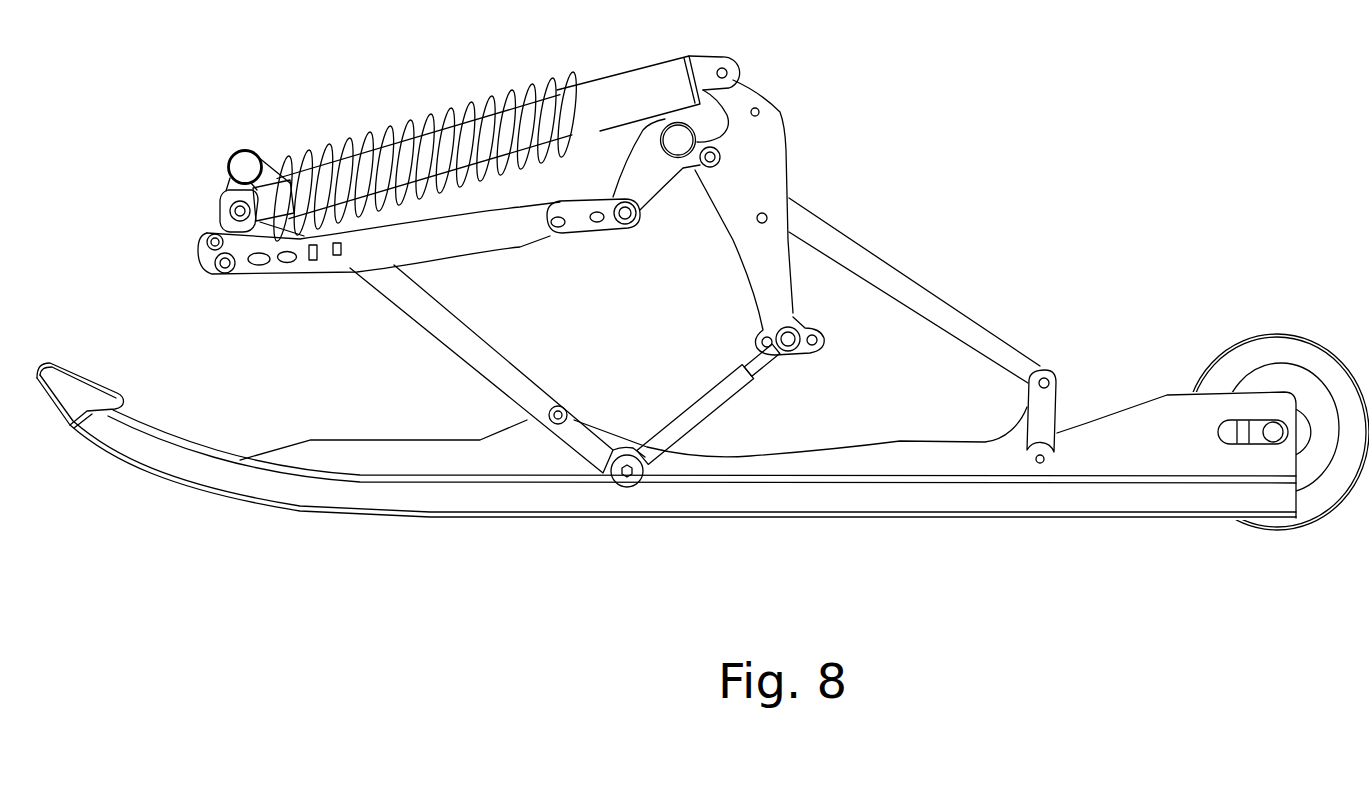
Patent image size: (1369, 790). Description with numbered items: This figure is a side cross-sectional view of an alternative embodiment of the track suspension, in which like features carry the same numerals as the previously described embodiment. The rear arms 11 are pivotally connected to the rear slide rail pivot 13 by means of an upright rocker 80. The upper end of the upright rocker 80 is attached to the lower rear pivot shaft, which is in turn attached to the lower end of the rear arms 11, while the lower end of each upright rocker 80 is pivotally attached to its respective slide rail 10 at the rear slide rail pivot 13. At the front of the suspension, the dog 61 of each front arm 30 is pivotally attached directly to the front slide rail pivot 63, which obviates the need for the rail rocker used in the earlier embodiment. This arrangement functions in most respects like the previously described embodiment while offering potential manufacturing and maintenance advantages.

The slide rail 10 is at (827, 513).
The rear arms 11 is at (905, 268).
The rear slide rail pivot 13 is at (1040, 463).
The front arm 30 is at (492, 340).
The dog 61 is at (558, 406).
The front slide rail pivot 63 is at (570, 418).
The upright rocker 80 is at (1025, 413).